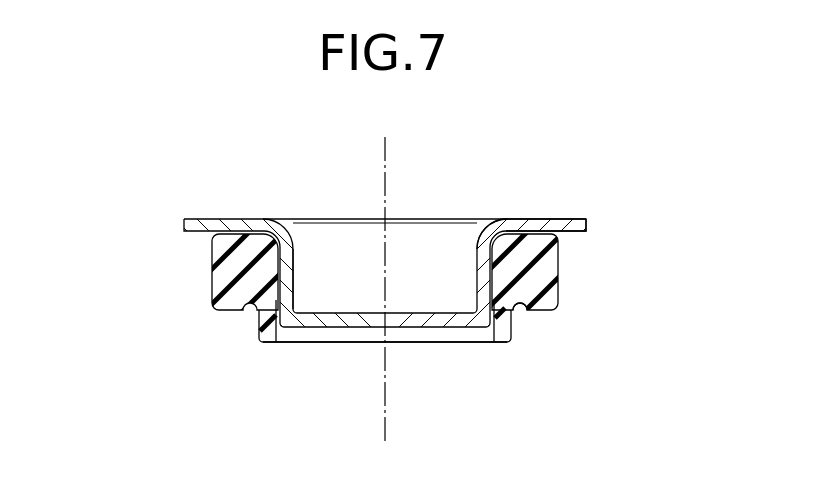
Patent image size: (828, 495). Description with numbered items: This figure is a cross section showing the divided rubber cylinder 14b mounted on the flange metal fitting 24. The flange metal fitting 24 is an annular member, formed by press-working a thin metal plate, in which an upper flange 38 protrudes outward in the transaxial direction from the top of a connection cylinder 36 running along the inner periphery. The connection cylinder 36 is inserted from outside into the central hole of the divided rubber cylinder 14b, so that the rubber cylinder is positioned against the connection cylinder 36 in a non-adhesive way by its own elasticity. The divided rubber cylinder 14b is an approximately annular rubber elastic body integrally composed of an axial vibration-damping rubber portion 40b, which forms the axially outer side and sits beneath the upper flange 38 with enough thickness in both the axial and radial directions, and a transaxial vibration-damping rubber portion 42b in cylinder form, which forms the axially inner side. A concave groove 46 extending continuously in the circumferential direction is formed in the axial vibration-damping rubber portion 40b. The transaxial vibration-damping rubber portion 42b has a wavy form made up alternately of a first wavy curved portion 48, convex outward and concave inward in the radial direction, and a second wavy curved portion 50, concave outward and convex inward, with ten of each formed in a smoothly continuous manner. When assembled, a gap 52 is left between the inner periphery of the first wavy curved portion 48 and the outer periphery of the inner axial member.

The divided rubber cylinder 14b is at (574, 284).
The flange metal fitting 24 is at (469, 232).
The connection cylinder 36 is at (288, 283).
The upper flange 38 is at (551, 222).
The axial vibration-damping rubber portion 40b is at (208, 279).
The transaxial vibration-damping rubber portion 42b is at (268, 354).
The concave groove 46 is at (522, 306).
The first wavy curved portion 48 is at (262, 320).
The second wavy curved portion 50 is at (502, 328).
The gap 52 is at (278, 311).